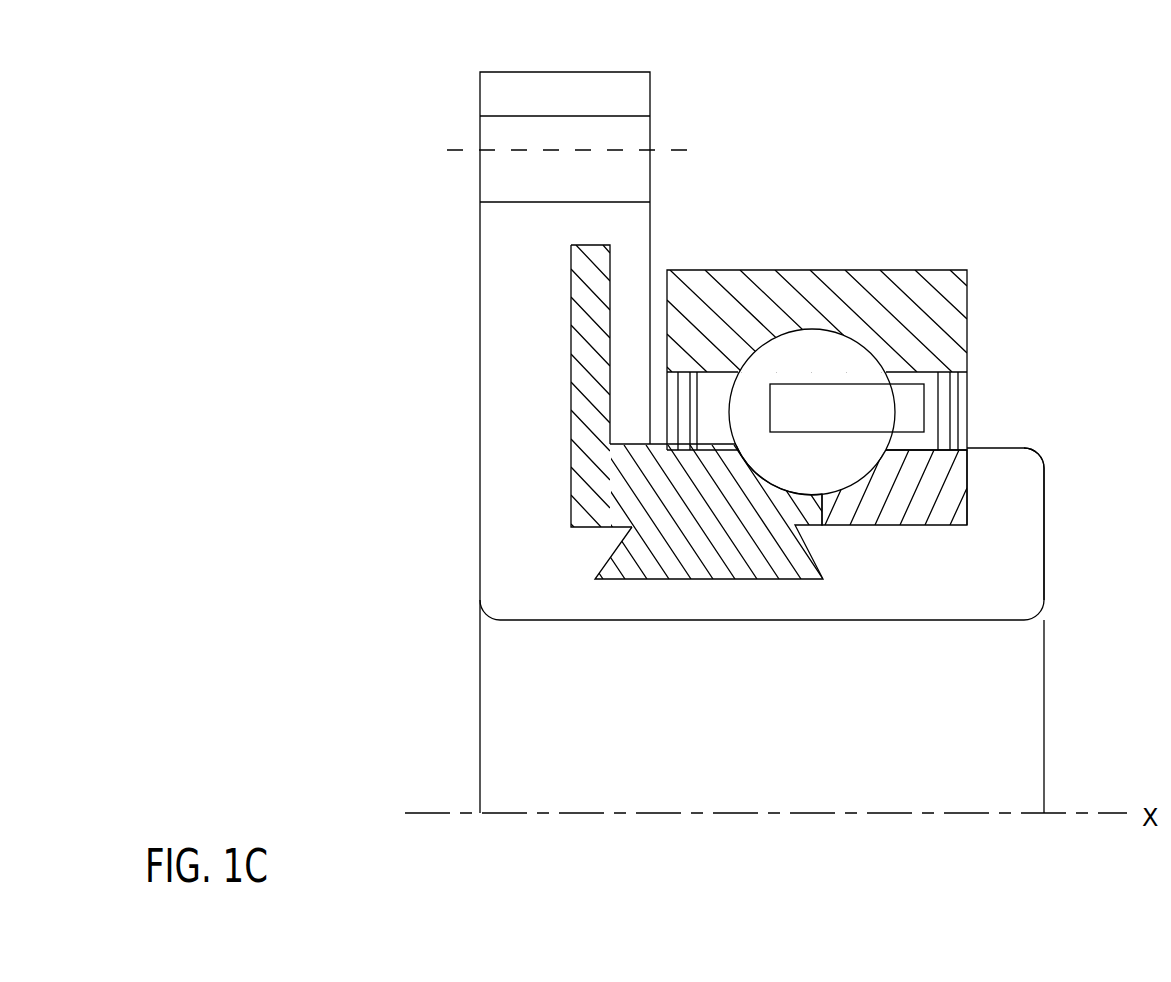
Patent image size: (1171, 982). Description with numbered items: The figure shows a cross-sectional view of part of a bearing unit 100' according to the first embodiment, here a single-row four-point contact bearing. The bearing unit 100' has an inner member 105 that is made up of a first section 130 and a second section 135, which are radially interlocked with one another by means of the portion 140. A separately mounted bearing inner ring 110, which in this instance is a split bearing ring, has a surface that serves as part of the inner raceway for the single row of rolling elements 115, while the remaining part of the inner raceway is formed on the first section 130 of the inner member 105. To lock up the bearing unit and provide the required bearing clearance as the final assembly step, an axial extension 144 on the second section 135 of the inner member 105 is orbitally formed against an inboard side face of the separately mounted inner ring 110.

The bearing unit 100' is at (887, 297).
The inner member 105 is at (387, 288).
The bearing inner ring 110 is at (913, 510).
The rolling elements 115 is at (815, 352).
The first section 130 is at (605, 487).
The second section 135 is at (515, 545).
The portion 140 is at (703, 560).
The axial extension 144 is at (1002, 478).